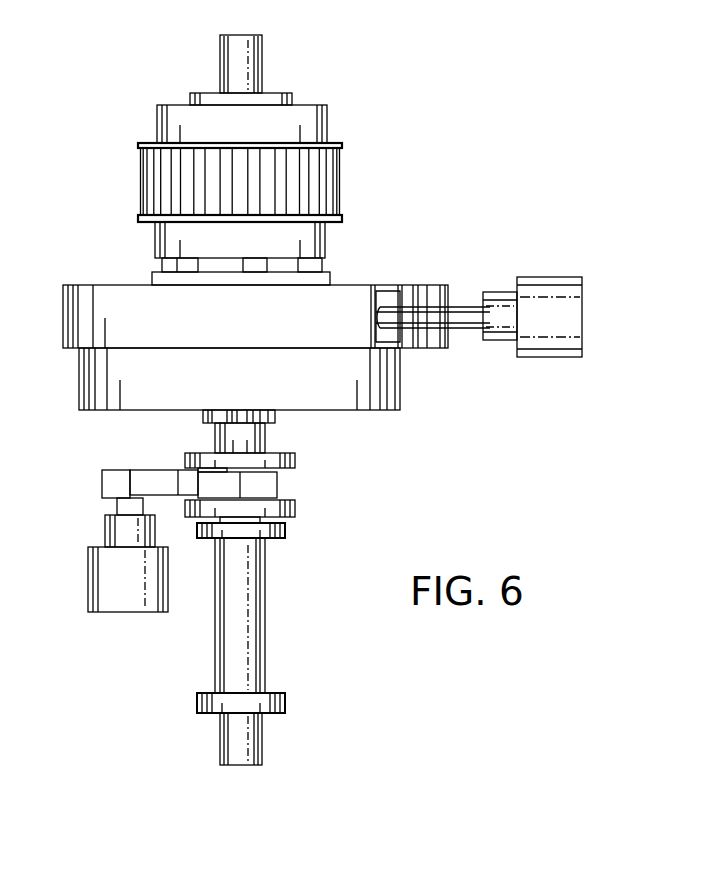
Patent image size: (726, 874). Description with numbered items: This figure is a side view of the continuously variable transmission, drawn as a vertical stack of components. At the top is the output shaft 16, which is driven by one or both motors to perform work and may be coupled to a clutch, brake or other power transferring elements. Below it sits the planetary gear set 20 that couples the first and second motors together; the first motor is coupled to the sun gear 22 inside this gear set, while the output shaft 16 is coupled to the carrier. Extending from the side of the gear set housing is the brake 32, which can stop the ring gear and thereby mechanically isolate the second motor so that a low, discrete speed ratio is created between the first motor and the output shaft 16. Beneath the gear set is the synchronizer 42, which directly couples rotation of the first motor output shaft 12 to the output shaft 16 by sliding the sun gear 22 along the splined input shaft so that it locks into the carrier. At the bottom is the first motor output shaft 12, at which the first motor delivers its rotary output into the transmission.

The first motor output shaft 12 is at (255, 740).
The output shaft 16 is at (258, 58).
The planetary gear set 20 is at (95, 390).
The sun gear 22 is at (282, 416).
The brake 32 is at (432, 292).
The synchronizer 42 is at (275, 479).